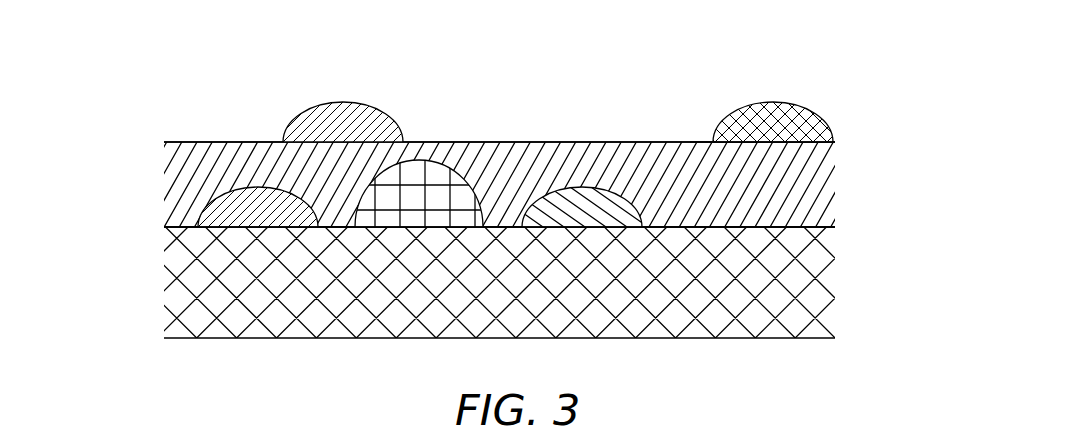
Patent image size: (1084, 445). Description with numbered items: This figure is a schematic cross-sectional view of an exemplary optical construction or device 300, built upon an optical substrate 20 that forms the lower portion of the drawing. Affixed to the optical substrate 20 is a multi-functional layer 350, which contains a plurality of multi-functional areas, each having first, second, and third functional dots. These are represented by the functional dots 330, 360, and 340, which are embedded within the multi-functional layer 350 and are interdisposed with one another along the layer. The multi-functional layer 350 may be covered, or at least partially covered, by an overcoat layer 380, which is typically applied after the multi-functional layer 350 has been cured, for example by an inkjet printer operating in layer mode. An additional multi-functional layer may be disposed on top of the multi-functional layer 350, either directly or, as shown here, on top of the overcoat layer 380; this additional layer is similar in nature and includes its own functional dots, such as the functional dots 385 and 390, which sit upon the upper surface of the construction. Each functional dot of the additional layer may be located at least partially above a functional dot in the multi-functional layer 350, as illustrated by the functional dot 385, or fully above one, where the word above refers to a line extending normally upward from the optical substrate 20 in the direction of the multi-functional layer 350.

The optical substrate 20 is at (725, 338).
The optical construction 300 is at (814, 69).
The first functional dot 330 is at (251, 187).
The third functional dot 340 is at (586, 187).
The multi-functional layer 350 is at (152, 205).
The second functional dot 360 is at (428, 172).
The overcoat layer 380 is at (710, 142).
The functional dot 385 is at (341, 103).
The functional dot 390 is at (824, 118).